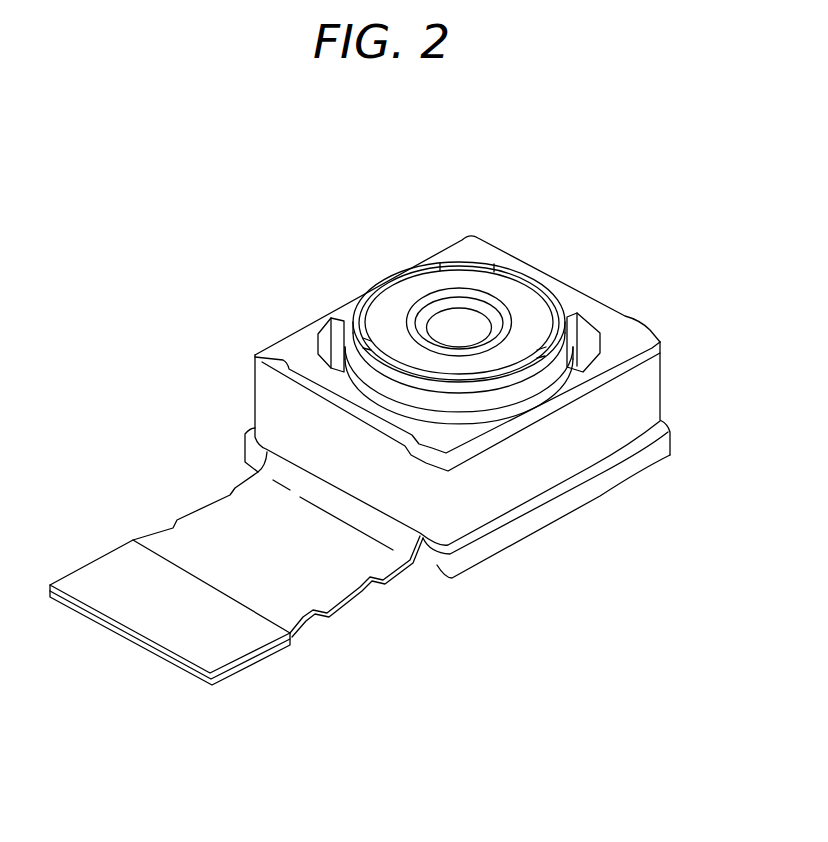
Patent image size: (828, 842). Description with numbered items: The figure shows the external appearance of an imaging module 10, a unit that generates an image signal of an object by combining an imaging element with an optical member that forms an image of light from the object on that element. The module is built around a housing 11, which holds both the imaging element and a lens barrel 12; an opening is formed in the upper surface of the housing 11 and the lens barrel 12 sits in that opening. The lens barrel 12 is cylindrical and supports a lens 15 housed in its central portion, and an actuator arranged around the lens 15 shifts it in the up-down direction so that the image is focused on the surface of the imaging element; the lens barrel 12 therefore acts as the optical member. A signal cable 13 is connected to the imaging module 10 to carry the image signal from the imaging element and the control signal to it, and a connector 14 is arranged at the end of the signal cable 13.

The imaging module 10 is at (646, 236).
The housing 11 is at (290, 340).
The lens barrel 12 is at (392, 307).
The signal cable 13 is at (203, 512).
The connector 14 is at (95, 568).
The lens 15 is at (447, 317).